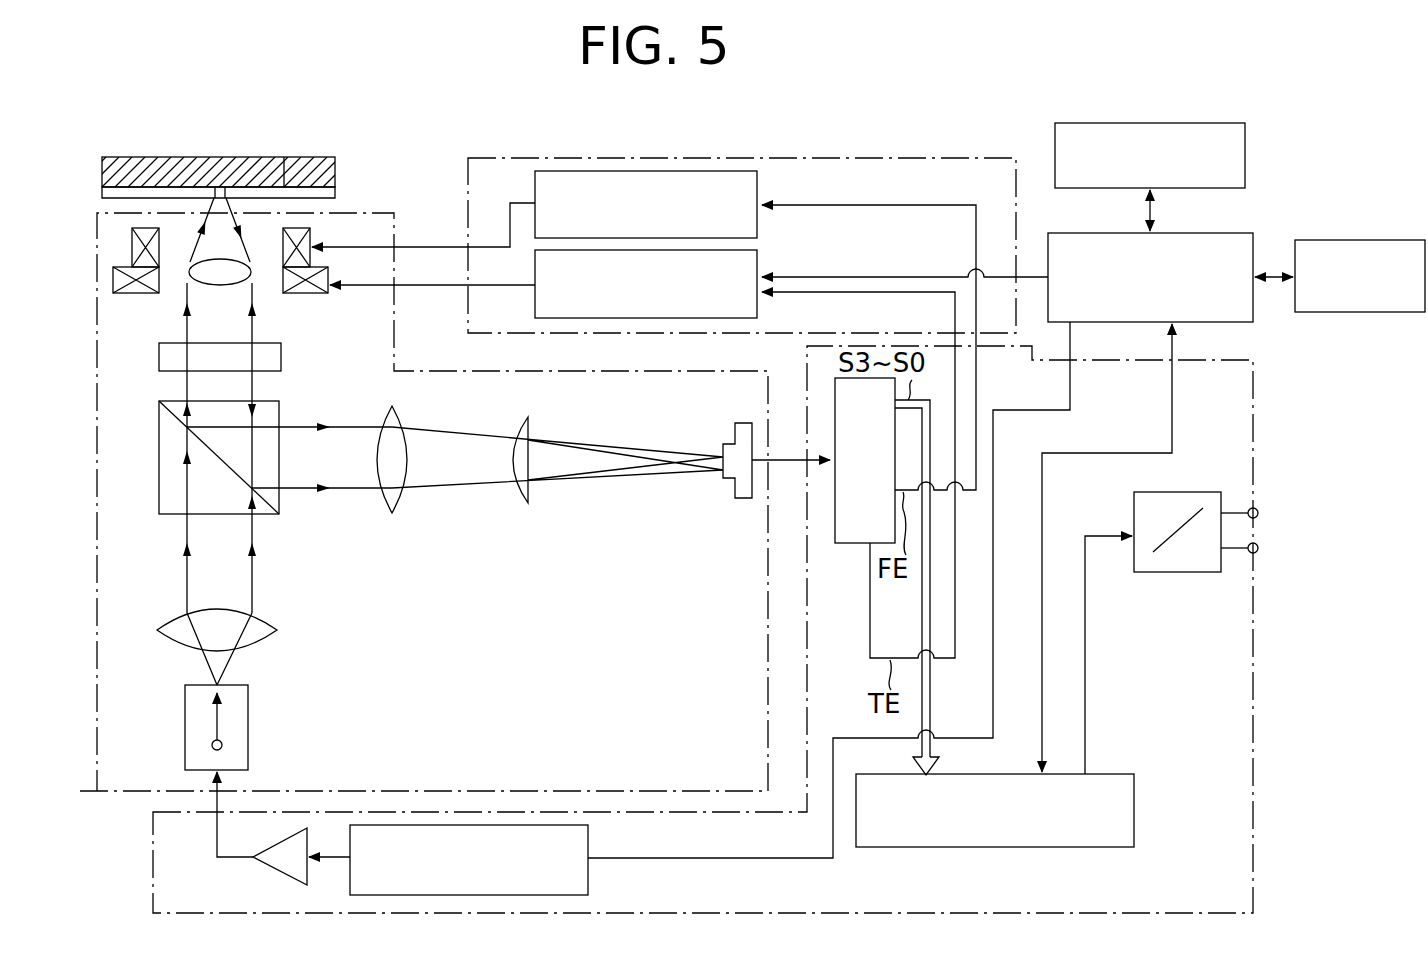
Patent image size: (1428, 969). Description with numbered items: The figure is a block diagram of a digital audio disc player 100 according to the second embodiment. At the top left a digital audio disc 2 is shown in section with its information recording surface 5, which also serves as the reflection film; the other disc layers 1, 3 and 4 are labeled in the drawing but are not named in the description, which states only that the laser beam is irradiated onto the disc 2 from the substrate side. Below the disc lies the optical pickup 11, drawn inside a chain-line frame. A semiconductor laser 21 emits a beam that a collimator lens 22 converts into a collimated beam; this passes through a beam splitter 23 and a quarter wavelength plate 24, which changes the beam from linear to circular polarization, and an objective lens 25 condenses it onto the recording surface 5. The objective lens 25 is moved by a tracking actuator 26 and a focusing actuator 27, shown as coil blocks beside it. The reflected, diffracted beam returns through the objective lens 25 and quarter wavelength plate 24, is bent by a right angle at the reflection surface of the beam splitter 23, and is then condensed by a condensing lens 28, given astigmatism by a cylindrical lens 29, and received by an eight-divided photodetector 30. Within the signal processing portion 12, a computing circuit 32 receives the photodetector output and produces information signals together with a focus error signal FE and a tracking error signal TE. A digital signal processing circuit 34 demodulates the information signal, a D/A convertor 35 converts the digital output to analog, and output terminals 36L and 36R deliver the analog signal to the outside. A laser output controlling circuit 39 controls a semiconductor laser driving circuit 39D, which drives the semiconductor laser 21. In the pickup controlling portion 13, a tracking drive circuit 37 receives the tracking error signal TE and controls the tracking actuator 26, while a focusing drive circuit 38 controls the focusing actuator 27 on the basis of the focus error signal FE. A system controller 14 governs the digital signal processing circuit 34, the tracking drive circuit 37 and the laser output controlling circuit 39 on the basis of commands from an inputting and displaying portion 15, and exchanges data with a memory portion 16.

The optical disk 1 is at (190, 157).
The digital audio disc 2 is at (140, 144).
The protective layer 3 is at (336, 191).
The substrate 4 is at (249, 157).
The information recording surface 5 is at (289, 184).
The digital audio disc player 100 is at (431, 180).
The optical pickup 11 is at (396, 338).
The signal processing portion 12 is at (1255, 835).
The pickup controlling portion 13 is at (685, 158).
The system controller 14 is at (1072, 233).
The inputting and displaying portion 15 is at (1068, 123).
The memory portion 16 is at (1310, 240).
The semiconductor laser 21 is at (248, 737).
The collimator lens 22 is at (276, 628).
The beam splitter 23 is at (159, 471).
The quarter wavelength plate 24 is at (159, 366).
The objective lens 25 is at (240, 285).
The tracking actuator 26 is at (130, 294).
The focusing actuator 27 is at (159, 256).
The condensing lens 28 is at (385, 513).
The cylindrical lens 29 is at (516, 504).
The eight-divided photodetector 30 is at (735, 430).
The computing circuit 32 is at (848, 544).
The digital signal processing circuit 34 is at (1134, 798).
The D/A convertor 35 is at (1134, 512).
The output terminal 36L is at (1258, 510).
The output terminal 36R is at (1258, 554).
The tracking drive circuit 37 is at (758, 252).
The focusing drive circuit 38 is at (758, 184).
The laser output controlling circuit 39 is at (590, 840).
The semiconductor laser driving circuit 39D is at (275, 870).